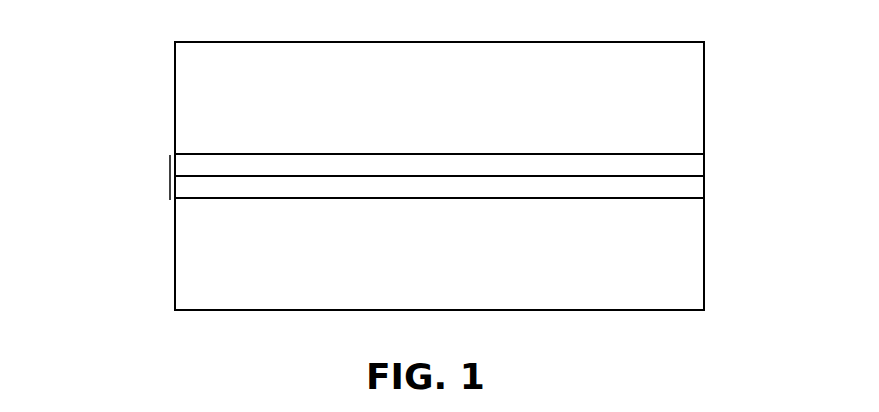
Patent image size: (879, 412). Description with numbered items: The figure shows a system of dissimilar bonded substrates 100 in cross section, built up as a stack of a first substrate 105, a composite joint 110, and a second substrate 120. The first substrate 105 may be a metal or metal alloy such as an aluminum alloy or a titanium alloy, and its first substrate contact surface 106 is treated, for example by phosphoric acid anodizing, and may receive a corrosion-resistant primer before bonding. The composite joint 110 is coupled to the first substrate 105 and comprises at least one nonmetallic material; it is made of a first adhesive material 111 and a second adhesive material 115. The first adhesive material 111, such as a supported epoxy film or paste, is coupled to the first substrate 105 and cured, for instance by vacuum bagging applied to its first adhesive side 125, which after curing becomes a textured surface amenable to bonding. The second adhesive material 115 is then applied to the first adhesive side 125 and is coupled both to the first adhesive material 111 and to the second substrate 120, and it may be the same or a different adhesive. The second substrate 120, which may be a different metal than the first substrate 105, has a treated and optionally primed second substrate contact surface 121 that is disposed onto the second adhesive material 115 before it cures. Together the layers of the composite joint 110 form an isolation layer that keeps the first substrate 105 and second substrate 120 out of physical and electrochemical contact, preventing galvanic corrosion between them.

The system of dissimilar bonded substrates 100 is at (86, 77).
The first substrate 105 is at (230, 297).
The first substrate contact surface 106 is at (522, 198).
The composite joint 110 is at (168, 175).
The first adhesive material 111 is at (175, 205).
The second adhesive material 115 is at (188, 161).
The second substrate 120 is at (686, 80).
The second substrate contact surface 121 is at (585, 153).
The first adhesive side 125 is at (708, 176).